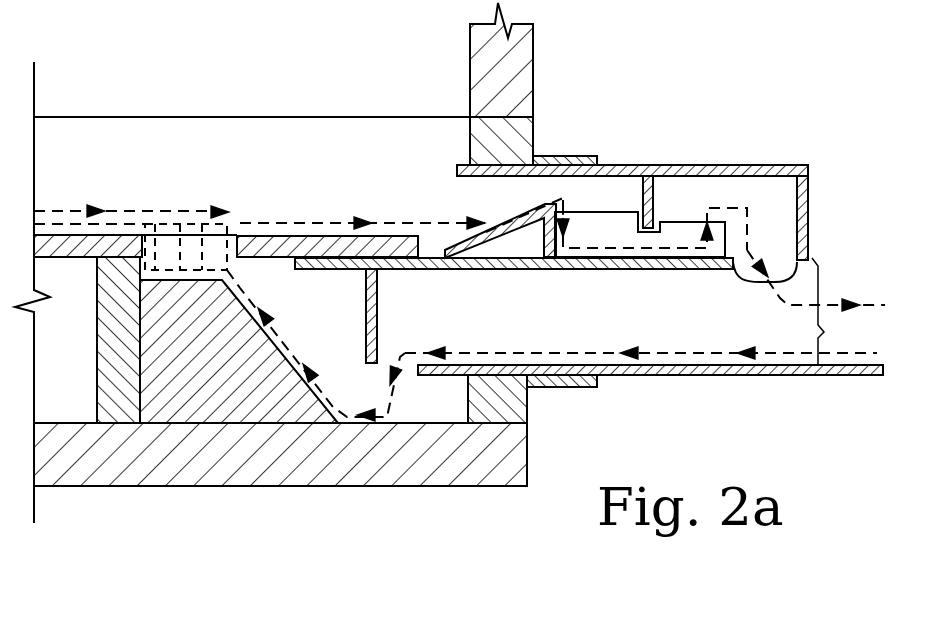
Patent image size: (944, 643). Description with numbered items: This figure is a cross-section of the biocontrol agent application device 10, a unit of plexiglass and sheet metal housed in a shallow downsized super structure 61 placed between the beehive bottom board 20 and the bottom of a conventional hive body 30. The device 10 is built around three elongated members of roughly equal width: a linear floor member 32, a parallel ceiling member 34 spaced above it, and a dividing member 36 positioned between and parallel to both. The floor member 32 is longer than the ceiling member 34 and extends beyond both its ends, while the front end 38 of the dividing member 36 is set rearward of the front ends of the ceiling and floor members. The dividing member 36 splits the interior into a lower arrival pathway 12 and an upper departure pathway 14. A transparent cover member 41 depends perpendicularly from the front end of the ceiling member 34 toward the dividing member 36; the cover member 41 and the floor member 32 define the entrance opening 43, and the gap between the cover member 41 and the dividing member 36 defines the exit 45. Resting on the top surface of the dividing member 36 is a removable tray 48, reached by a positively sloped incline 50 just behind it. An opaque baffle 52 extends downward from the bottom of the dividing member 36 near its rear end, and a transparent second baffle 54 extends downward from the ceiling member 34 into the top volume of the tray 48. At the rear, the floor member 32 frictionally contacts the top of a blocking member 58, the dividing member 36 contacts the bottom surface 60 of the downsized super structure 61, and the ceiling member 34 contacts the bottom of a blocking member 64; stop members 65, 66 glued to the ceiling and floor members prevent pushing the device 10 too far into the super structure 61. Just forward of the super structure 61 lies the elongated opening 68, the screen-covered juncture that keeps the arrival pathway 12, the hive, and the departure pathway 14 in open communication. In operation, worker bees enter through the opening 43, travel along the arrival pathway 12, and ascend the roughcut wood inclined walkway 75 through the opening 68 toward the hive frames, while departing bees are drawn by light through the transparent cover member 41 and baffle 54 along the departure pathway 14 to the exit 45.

The biocontrol agent application device 10 is at (897, 327).
The arrival pathway 12 is at (880, 353).
The departure pathway 14 is at (66, 210).
The beehive bottom board 20 is at (133, 487).
The hive body 30 is at (535, 60).
The floor member 32 is at (740, 377).
The ceiling member 34 is at (735, 165).
The dividing member 36 is at (470, 272).
The front end of dividing member 38 is at (748, 250).
The cover member 41 is at (810, 200).
The opening 43 is at (835, 311).
The exit 45 is at (760, 282).
The tray 48 is at (603, 233).
The incline 50 is at (515, 216).
The baffle 52 is at (365, 312).
The second baffle 54 is at (654, 186).
The blocking member 58 is at (470, 400).
The bottom surface of downsized super structure 60 is at (280, 260).
The downsized super structure 61 is at (118, 346).
The blocking member 64 is at (535, 140).
The stop member 65 is at (600, 157).
The stop member 66 is at (575, 388).
The elongated opening 68 is at (220, 263).
The inclined walkway 75 is at (343, 378).